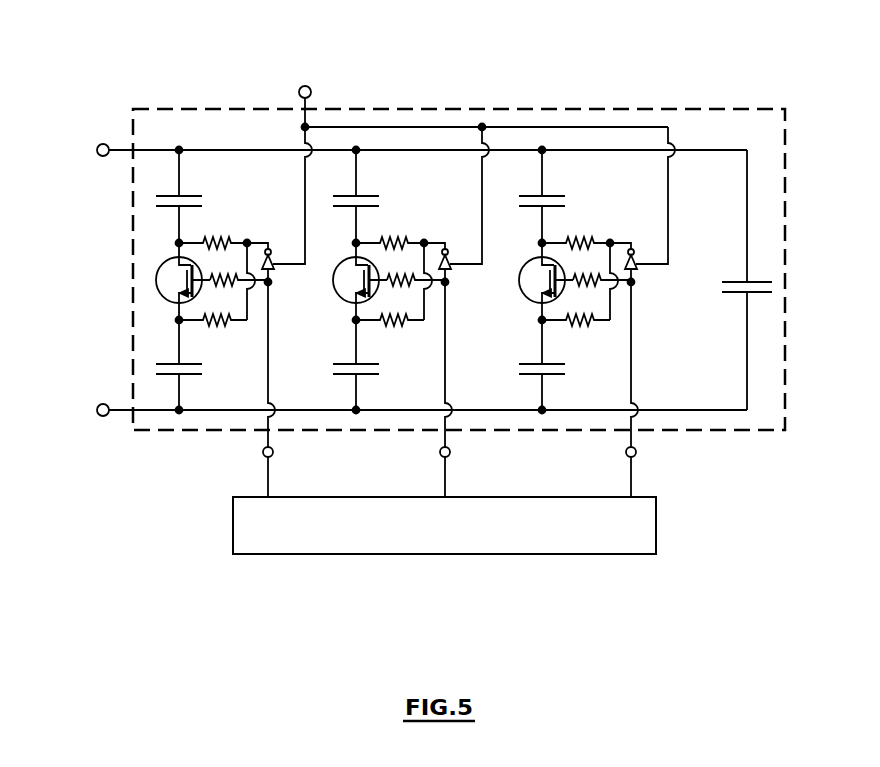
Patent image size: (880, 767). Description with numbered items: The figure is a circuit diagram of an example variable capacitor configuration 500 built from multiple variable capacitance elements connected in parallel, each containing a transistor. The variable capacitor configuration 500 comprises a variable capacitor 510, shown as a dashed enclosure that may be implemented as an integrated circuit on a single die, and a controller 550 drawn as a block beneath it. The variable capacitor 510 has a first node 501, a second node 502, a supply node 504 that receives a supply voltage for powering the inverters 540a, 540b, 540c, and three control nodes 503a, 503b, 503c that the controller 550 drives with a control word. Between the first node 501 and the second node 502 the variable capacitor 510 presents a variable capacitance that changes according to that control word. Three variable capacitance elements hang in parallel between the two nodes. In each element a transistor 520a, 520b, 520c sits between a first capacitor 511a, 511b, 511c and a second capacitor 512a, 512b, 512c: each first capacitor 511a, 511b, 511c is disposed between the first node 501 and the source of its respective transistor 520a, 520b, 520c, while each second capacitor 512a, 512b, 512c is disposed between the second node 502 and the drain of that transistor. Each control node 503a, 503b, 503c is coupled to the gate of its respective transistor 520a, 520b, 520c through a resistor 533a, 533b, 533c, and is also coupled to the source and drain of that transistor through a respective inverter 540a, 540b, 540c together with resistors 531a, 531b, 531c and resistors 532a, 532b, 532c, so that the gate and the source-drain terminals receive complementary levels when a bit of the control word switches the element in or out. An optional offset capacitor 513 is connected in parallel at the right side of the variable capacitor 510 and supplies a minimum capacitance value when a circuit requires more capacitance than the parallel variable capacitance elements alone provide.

The variable capacitor configuration 500 is at (274, 58).
The variable capacitor 510 is at (226, 108).
The supply node 504 is at (310, 87).
The first node 501 is at (97, 150).
The second node 502 is at (97, 410).
The offset capacitor 513 is at (735, 281).
The first capacitor 511a is at (191, 195).
The first capacitor 511b is at (368, 195).
The first capacitor 511c is at (554, 195).
The second capacitor 512a is at (188, 376).
The second capacitor 512b is at (365, 376).
The second capacitor 512c is at (551, 376).
The transistor 520a is at (240, 243).
The transistor 520b is at (417, 243).
The transistor 520c is at (603, 243).
The resistor 531a is at (207, 240).
The resistor 531b is at (384, 240).
The resistor 531c is at (570, 240).
The resistor 532a is at (207, 325).
The resistor 532b is at (384, 325).
The resistor 532c is at (570, 325).
The resistor 533a is at (228, 287).
The resistor 533b is at (405, 287).
The resistor 533c is at (591, 287).
The inverter 540a is at (272, 268).
The inverter 540b is at (449, 268).
The inverter 540c is at (635, 268).
The control node 503a is at (263, 451).
The control node 503b is at (440, 451).
The control node 503c is at (626, 451).
The controller 550 is at (328, 554).